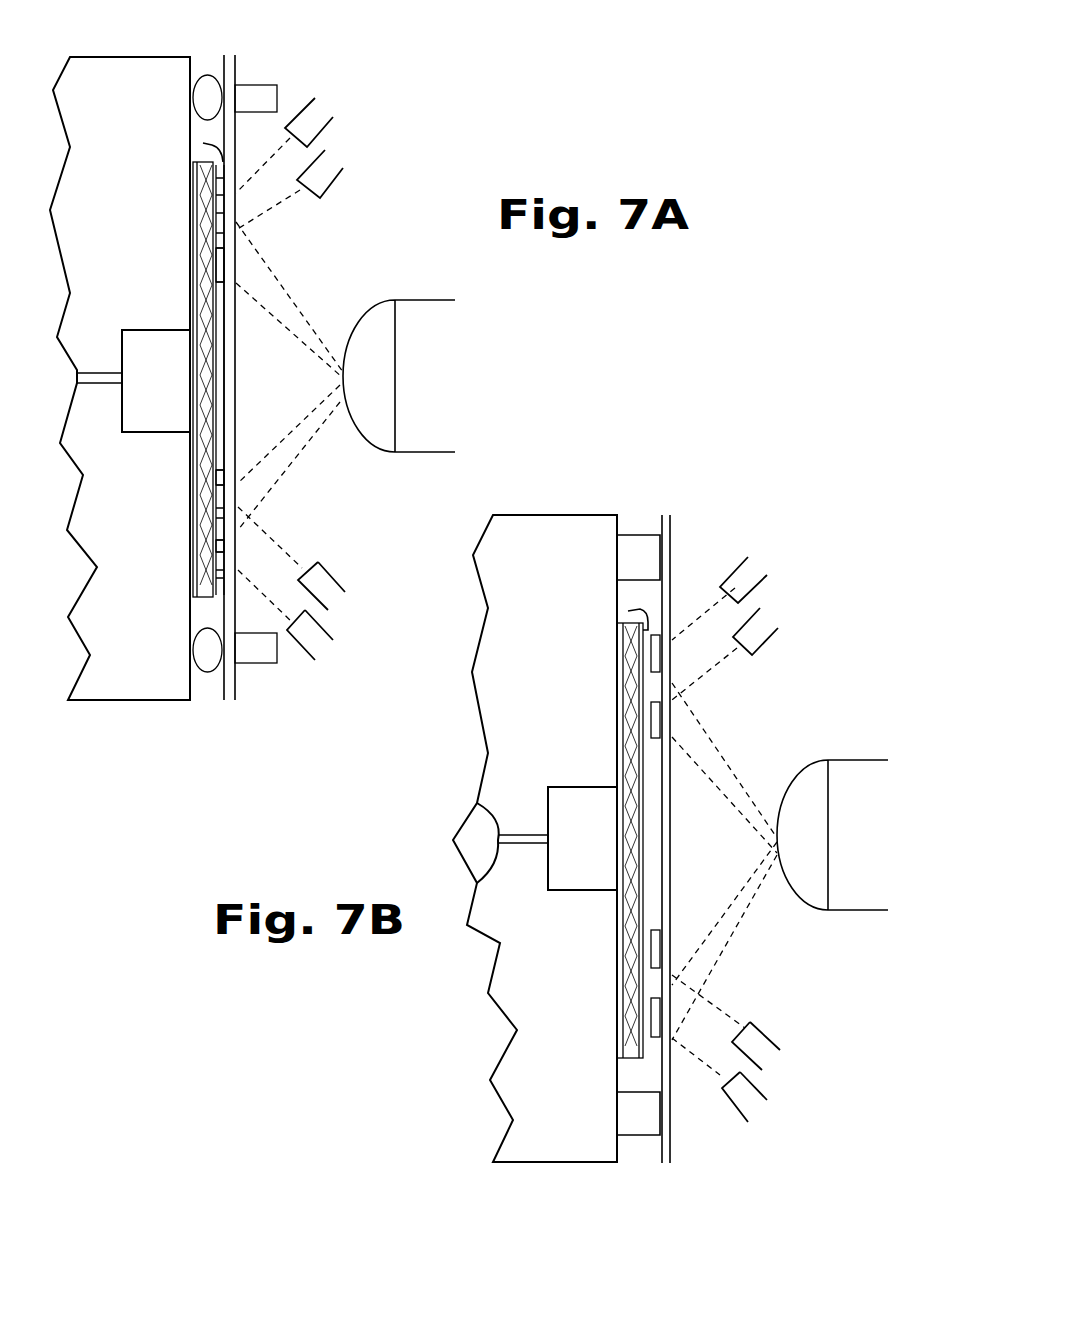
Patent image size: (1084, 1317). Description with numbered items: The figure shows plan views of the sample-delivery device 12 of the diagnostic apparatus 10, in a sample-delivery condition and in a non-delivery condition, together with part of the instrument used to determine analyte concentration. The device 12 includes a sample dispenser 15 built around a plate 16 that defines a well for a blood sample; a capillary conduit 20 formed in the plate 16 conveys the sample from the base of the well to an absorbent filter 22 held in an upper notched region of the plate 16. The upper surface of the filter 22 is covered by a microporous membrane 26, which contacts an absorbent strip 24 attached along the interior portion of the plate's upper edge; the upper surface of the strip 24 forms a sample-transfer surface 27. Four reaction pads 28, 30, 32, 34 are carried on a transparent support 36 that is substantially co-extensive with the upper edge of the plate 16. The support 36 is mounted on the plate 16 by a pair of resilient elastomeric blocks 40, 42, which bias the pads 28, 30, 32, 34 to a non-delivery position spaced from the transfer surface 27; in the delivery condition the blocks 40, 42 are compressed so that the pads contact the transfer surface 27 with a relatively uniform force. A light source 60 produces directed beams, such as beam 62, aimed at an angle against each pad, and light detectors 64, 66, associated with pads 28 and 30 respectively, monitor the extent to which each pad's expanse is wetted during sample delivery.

In FIG. 7A, the diagnostic apparatus 10 is at (297, 62).
In FIG. 7B, the diagnostic apparatus 10 is at (707, 545).
In FIG. 7A, the sample-delivery device 12 is at (95, 620).
In FIG. 7B, the sample-delivery device 12 is at (482, 697).
In FIG. 7A, the sample dispenser 15 is at (113, 682).
In FIG. 7B, the sample dispenser 15 is at (527, 942).
In FIG. 7A, the plate 16 is at (83, 475).
In FIG. 7B, the plate 16 is at (493, 637).
In FIG. 7A, the capillary conduit 20 is at (88, 385).
In FIG. 7B, the capillary conduit 20 is at (525, 847).
In FIG. 7A, the absorbent filter 22 is at (138, 330).
In FIG. 7B, the absorbent filter 22 is at (567, 878).
In FIG. 7A, the absorbent strip 24 is at (193, 593).
In FIG. 7B, the absorbent strip 24 is at (633, 688).
In FIG. 7B, the microporous membrane 26 is at (620, 757).
In FIG. 7A, the sample-transfer surface 27 is at (203, 143).
In FIG. 7B, the sample-transfer surface 27 is at (628, 611).
In FIG. 7A, the reaction pad 28 is at (218, 193).
In FIG. 7B, the reaction pad 28 is at (652, 645).
In FIG. 7A, the reaction pad 30 is at (218, 258).
In FIG. 7B, the reaction pad 30 is at (652, 713).
In FIG. 7A, the reaction pad 32 is at (218, 488).
In FIG. 7B, the reaction pad 32 is at (652, 940).
In FIG. 7A, the reaction pad 34 is at (220, 548).
In FIG. 7B, the reaction pad 34 is at (652, 1010).
In FIG. 7A, the transparent support 36 is at (235, 70).
In FIG. 7B, the transparent support 36 is at (665, 822).
In FIG. 7A, the elastomeric block 40 is at (210, 75).
In FIG. 7B, the elastomeric block 40 is at (642, 545).
In FIG. 7A, the elastomeric block 42 is at (207, 665).
In FIG. 7B, the elastomeric block 42 is at (637, 1128).
In FIG. 7A, the light source 60 is at (373, 320).
In FIG. 7B, the light source 60 is at (807, 787).
In FIG. 7A, the light beam 62 is at (292, 289).
In FIG. 7B, the light beam 62 is at (705, 722).
In FIG. 7A, the light detector 64 is at (315, 115).
In FIG. 7B, the light detector 64 is at (753, 573).
In FIG. 7A, the light detector 66 is at (322, 172).
In FIG. 7B, the light detector 66 is at (765, 623).